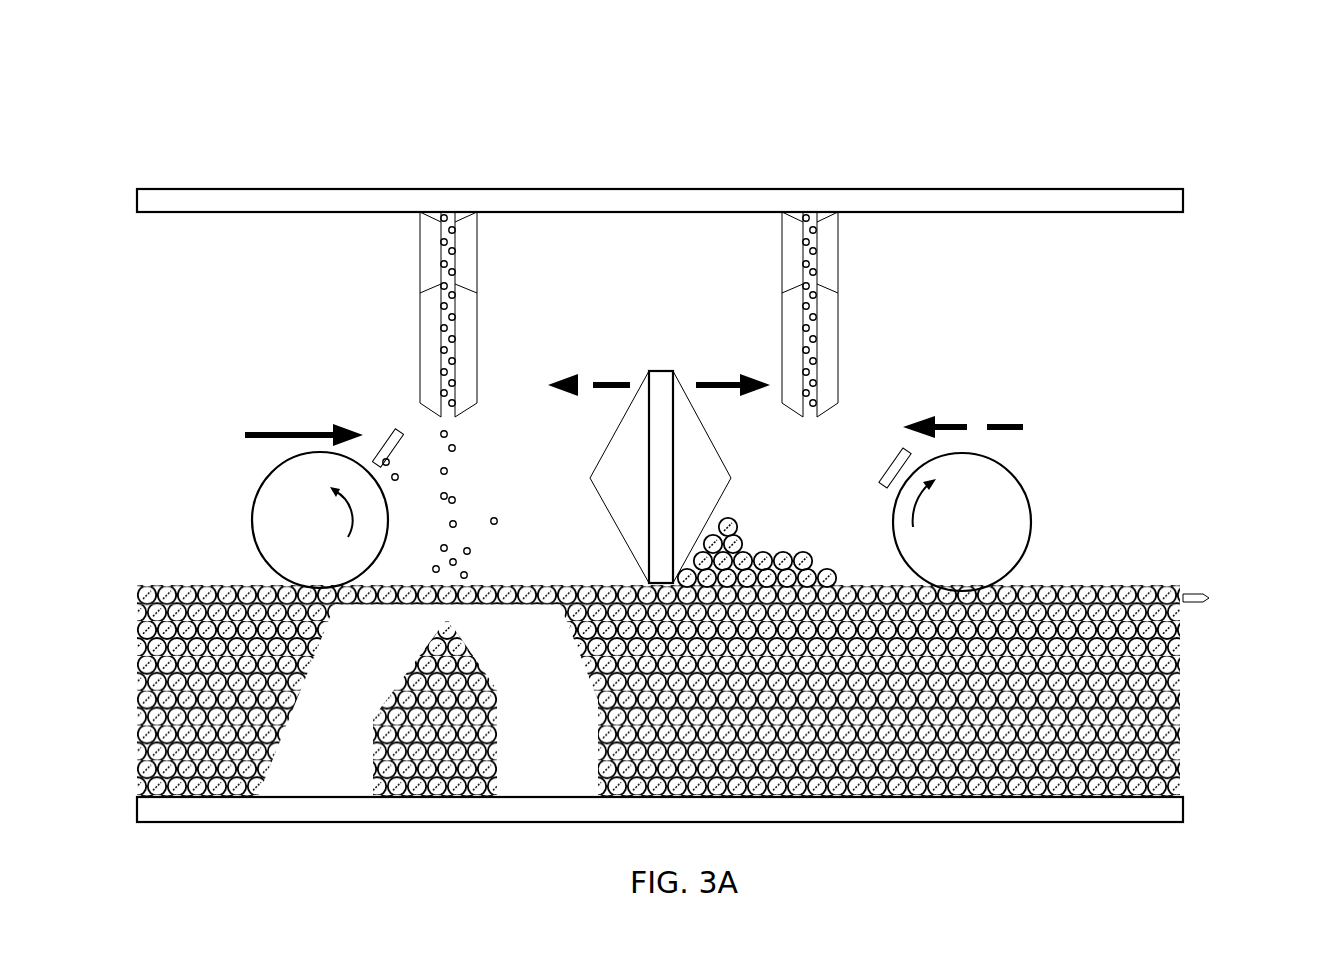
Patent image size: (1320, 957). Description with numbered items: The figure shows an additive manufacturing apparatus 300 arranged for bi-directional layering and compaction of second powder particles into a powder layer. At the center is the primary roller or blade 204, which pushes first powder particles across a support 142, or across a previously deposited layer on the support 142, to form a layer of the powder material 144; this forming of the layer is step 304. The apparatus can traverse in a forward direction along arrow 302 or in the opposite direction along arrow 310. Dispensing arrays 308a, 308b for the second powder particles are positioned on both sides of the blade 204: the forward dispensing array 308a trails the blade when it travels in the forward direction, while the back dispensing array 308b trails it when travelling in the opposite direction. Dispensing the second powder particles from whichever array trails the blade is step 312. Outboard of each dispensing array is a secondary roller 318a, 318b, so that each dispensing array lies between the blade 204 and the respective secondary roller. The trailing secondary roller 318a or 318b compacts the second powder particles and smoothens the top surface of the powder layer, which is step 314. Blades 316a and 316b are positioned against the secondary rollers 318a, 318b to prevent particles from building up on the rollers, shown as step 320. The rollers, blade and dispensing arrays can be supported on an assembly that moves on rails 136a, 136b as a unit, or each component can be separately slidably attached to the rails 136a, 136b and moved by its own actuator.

The apparatus 300 is at (240, 97).
The rail 136a is at (660, 242).
The rail 136b is at (300, 212).
The forward dispensing array 308a is at (480, 378).
The back dispensing array 308b is at (843, 350).
The arrow 302 is at (725, 373).
The arrow 310 is at (629, 383).
The primary roller or blade 204 is at (731, 478).
The blade 316a is at (393, 429).
The blade 316b is at (896, 460).
The step of preventing particle build-up 320 is at (395, 478).
The step of dispensing second powder particles 312 is at (465, 511).
The secondary roller 318a is at (343, 535).
The secondary roller 318b is at (991, 532).
The step of compacting and smoothing 314 is at (260, 573).
The step of forming a powder layer 304 is at (773, 538).
The layer of powder material 144 is at (1210, 598).
The support 142 is at (895, 822).